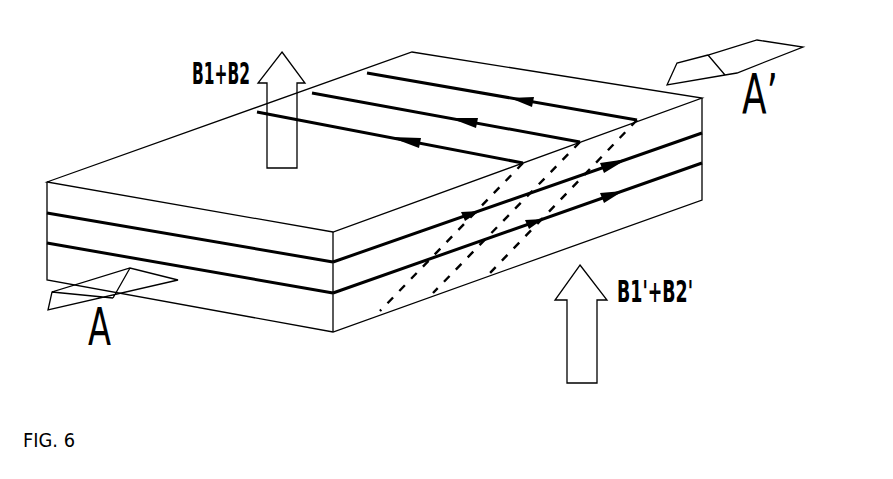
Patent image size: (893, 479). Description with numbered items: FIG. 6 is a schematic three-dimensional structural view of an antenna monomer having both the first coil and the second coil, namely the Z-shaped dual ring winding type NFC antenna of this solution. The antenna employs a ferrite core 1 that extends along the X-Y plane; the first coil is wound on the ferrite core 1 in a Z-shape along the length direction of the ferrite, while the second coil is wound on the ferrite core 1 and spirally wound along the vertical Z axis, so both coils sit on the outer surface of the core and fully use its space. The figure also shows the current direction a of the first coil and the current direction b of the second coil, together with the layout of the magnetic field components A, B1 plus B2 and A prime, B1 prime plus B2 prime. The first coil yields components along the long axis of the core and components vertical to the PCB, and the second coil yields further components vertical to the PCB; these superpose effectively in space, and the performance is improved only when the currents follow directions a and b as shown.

The ferrite core 1 is at (100, 163).
The current direction of the first coil a is at (447, 126).
The current direction of the second coil b is at (517, 215).